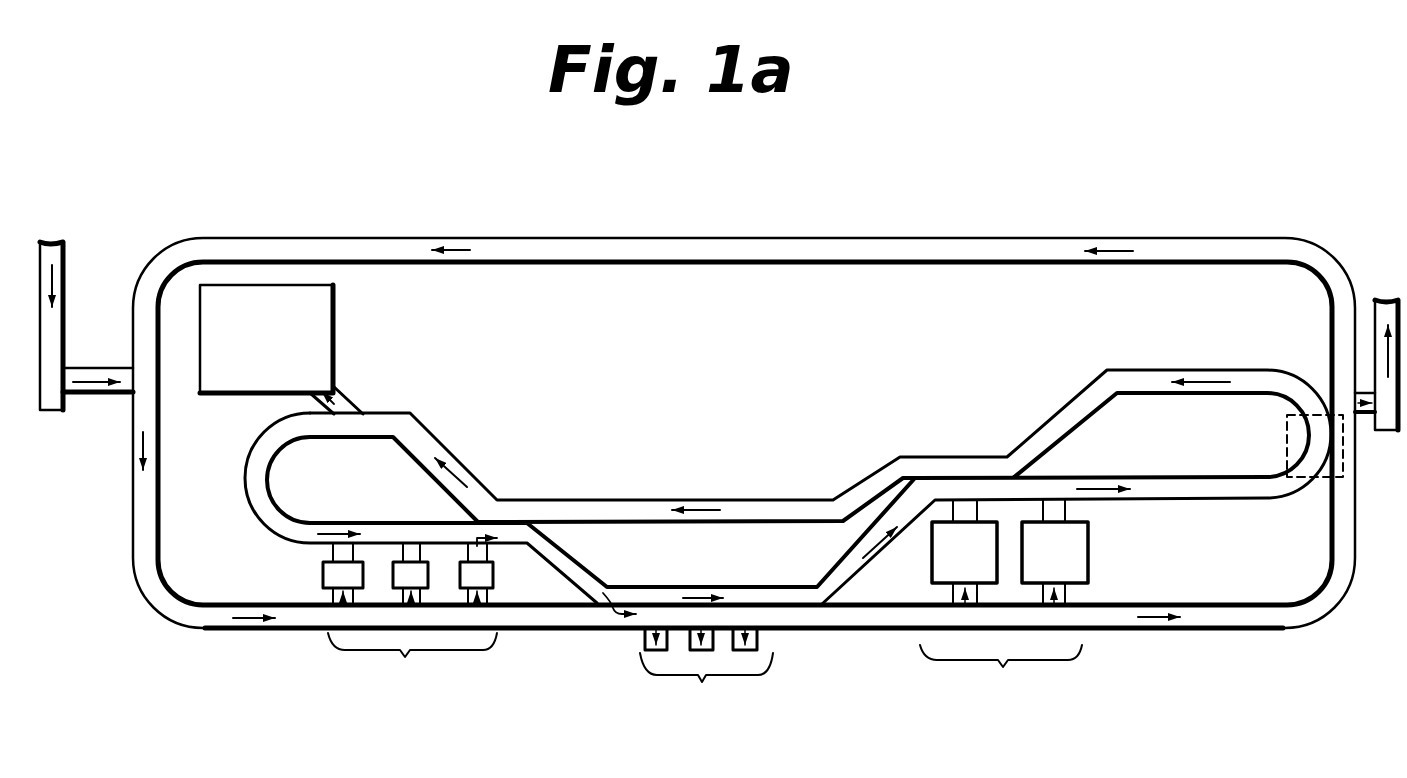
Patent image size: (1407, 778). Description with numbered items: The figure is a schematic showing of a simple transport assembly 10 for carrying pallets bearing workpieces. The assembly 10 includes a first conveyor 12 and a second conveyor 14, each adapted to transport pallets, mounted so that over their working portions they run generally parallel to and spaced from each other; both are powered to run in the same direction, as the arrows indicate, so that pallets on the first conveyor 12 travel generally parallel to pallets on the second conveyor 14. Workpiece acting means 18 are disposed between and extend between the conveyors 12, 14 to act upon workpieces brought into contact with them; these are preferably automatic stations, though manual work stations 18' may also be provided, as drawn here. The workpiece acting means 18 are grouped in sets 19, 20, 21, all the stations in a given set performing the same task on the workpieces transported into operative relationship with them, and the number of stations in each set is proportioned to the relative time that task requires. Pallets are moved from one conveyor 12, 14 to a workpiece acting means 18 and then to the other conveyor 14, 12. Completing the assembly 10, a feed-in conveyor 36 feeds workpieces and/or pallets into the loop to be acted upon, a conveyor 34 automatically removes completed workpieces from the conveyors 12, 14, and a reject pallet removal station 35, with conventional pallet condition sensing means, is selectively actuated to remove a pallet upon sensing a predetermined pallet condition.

The transport assembly 10 is at (1122, 235).
The first conveyor 12 is at (1211, 630).
The second conveyor 14 is at (1193, 478).
The workpiece acting means 18 is at (729, 552).
The manual work stations 18' is at (659, 662).
The set of workpiece acting means 19 is at (412, 665).
The set of workpiece acting means 20 is at (706, 683).
The set of workpiece acting means 21 is at (1001, 676).
The conveyor 34 is at (1362, 417).
The reject pallet removal station 35 is at (1287, 438).
The feed-in conveyor 36 is at (88, 367).